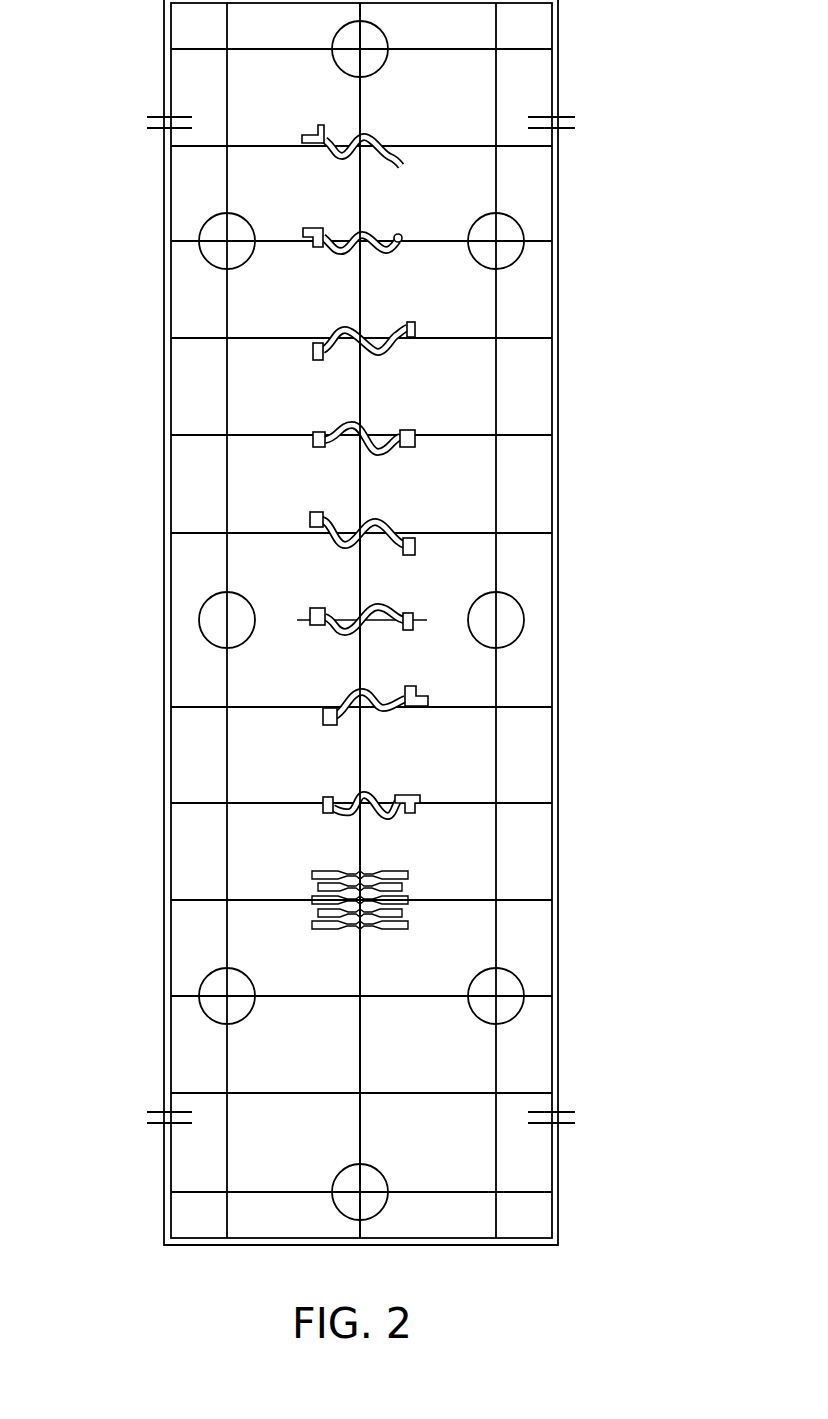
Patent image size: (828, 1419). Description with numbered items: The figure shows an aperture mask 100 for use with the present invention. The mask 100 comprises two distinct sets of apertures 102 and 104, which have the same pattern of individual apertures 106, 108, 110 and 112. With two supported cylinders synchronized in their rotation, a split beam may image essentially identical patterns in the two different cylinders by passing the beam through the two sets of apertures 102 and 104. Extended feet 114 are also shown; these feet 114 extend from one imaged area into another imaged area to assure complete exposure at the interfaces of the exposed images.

The aperture mask 100 is at (679, 123).
The first set of apertures 102 is at (602, 108).
The second set of apertures 104 is at (333, 685).
The individual aperture 106 is at (460, 811).
The individual aperture 108 is at (457, 699).
The individual aperture 110 is at (410, 642).
The individual aperture 112 is at (431, 537).
The extended feet 114 is at (418, 562).